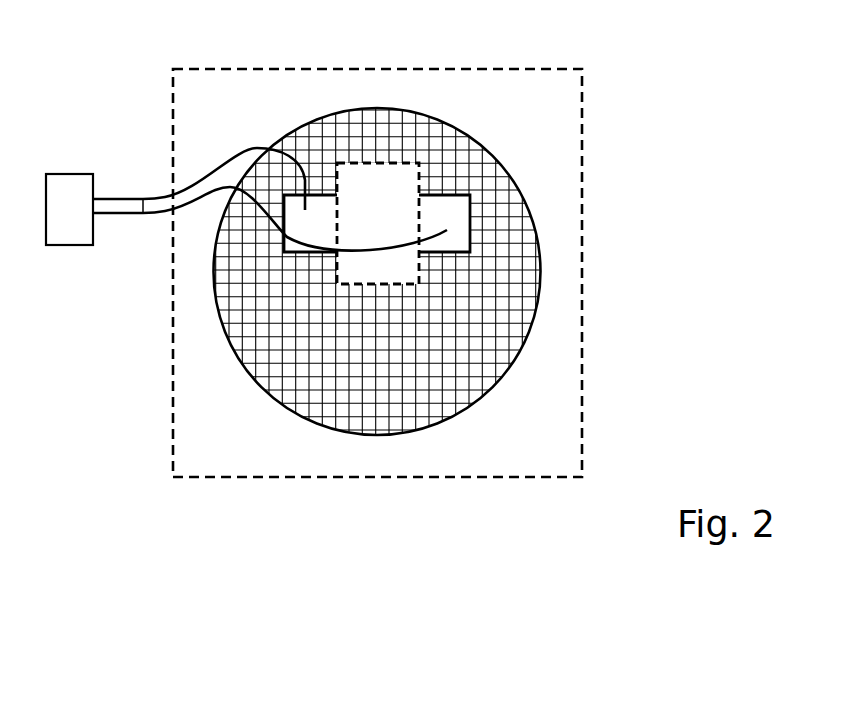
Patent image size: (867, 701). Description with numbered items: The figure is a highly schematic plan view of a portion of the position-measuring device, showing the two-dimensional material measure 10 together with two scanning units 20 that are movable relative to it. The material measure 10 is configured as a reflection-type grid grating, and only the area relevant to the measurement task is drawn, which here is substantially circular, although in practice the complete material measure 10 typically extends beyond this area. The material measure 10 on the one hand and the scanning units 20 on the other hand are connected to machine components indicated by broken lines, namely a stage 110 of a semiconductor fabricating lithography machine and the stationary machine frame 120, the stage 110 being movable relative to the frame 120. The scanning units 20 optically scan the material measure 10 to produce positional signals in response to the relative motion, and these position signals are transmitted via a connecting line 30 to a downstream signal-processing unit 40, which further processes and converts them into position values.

The material measure 10 is at (508, 173).
The scanning units 20 is at (285, 240).
The connecting line 30 is at (142, 197).
The signal-processing unit 40 is at (62, 243).
The stage 110 is at (582, 308).
The machine frame 120 is at (370, 185).